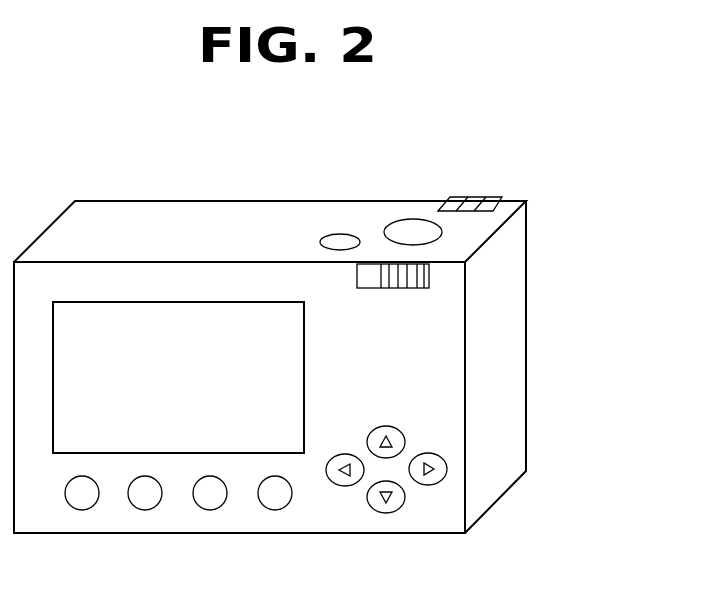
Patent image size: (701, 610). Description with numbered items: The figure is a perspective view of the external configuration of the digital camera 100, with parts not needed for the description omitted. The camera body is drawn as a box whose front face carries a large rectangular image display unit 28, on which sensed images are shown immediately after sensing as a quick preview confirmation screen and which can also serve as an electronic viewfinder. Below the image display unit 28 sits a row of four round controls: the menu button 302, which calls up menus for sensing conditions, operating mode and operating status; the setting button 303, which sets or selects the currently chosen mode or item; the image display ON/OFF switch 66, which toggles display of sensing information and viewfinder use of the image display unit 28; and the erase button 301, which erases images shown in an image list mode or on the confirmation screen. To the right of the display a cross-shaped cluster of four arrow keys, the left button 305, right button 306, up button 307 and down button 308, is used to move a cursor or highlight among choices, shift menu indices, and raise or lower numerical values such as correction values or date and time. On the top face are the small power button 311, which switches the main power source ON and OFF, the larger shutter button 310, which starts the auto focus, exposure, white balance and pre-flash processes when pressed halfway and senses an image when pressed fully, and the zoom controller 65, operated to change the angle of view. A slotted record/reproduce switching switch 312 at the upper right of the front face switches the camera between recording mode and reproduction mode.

The digital camera 100 is at (157, 209).
The image display unit 28 is at (304, 333).
The power button 311 is at (341, 240).
The shutter button 310 is at (415, 229).
The zoom controller 65 is at (477, 200).
The record/reproduce switching switch 312 is at (427, 275).
The menu button 302 is at (82, 497).
The setting button 303 is at (145, 497).
The image display ON/OFF switch 66 is at (210, 497).
The erase button 301 is at (275, 497).
The left button 305 is at (344, 459).
The right button 306 is at (440, 469).
The up button 307 is at (395, 438).
The down button 308 is at (387, 508).